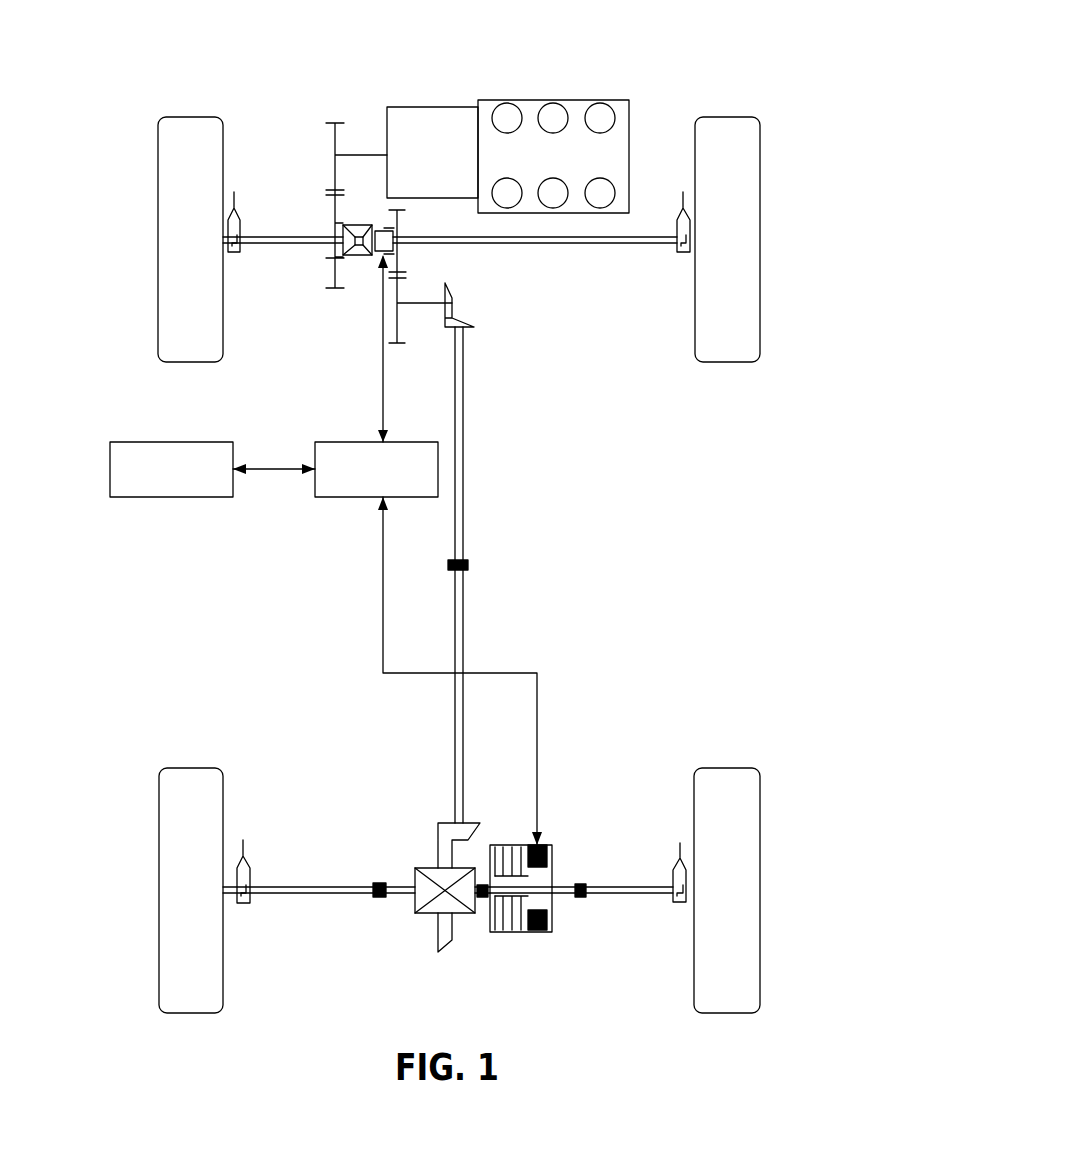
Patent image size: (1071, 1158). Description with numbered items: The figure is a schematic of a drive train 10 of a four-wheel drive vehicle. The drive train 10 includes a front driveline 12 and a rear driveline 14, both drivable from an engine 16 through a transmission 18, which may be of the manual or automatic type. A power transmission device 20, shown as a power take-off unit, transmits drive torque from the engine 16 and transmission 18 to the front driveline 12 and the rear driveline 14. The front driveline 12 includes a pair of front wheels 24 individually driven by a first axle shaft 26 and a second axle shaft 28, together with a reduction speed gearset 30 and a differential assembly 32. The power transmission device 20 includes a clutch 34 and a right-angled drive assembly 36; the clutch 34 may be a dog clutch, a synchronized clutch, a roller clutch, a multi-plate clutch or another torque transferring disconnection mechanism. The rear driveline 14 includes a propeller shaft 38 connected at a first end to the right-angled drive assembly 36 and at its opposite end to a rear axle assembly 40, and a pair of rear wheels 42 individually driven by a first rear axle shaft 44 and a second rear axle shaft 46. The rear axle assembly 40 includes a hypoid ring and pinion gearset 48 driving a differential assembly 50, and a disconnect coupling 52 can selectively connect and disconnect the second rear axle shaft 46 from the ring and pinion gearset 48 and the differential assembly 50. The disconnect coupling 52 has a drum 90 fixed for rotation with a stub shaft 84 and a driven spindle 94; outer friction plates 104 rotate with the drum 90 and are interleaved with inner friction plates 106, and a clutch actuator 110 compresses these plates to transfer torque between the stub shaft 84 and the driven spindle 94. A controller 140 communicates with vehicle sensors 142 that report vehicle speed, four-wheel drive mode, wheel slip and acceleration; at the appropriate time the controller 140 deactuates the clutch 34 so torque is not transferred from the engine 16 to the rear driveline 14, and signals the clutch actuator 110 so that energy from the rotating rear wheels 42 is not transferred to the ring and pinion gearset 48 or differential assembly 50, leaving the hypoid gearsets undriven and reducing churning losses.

The drive train 10 is at (684, 70).
The front driveline 12 is at (303, 324).
The rear driveline 14 is at (347, 745).
The engine 16 is at (534, 112).
The transmission 18 is at (417, 122).
The power transmission device 20 is at (508, 288).
The front wheels 24 is at (183, 191).
The first axle shaft 26 is at (269, 240).
The second axle shaft 28 is at (652, 247).
The reduction speed gearset 30 is at (321, 145).
The differential assembly 32 is at (365, 257).
The clutch 34 is at (406, 253).
The right-angled drive assembly 36 is at (493, 330).
The propeller shaft 38 is at (463, 450).
The rear axle assembly 40 is at (354, 916).
The rear wheels 42 is at (190, 838).
The first rear axle shaft 44 is at (281, 888).
The second rear axle shaft 46 is at (659, 893).
The hypoid ring and pinion gearset 48 is at (434, 812).
The differential assembly 50 is at (418, 928).
The disconnect coupling 52 is at (520, 830).
The stub shaft 84 is at (483, 898).
The drum 90 is at (493, 845).
The driven spindle 94 is at (537, 893).
The outer friction plates 104 is at (550, 867).
The inner friction plates 106 is at (525, 878).
The clutch actuator 110 is at (538, 932).
The controller 140 is at (322, 446).
The vehicle sensors 142 is at (135, 447).